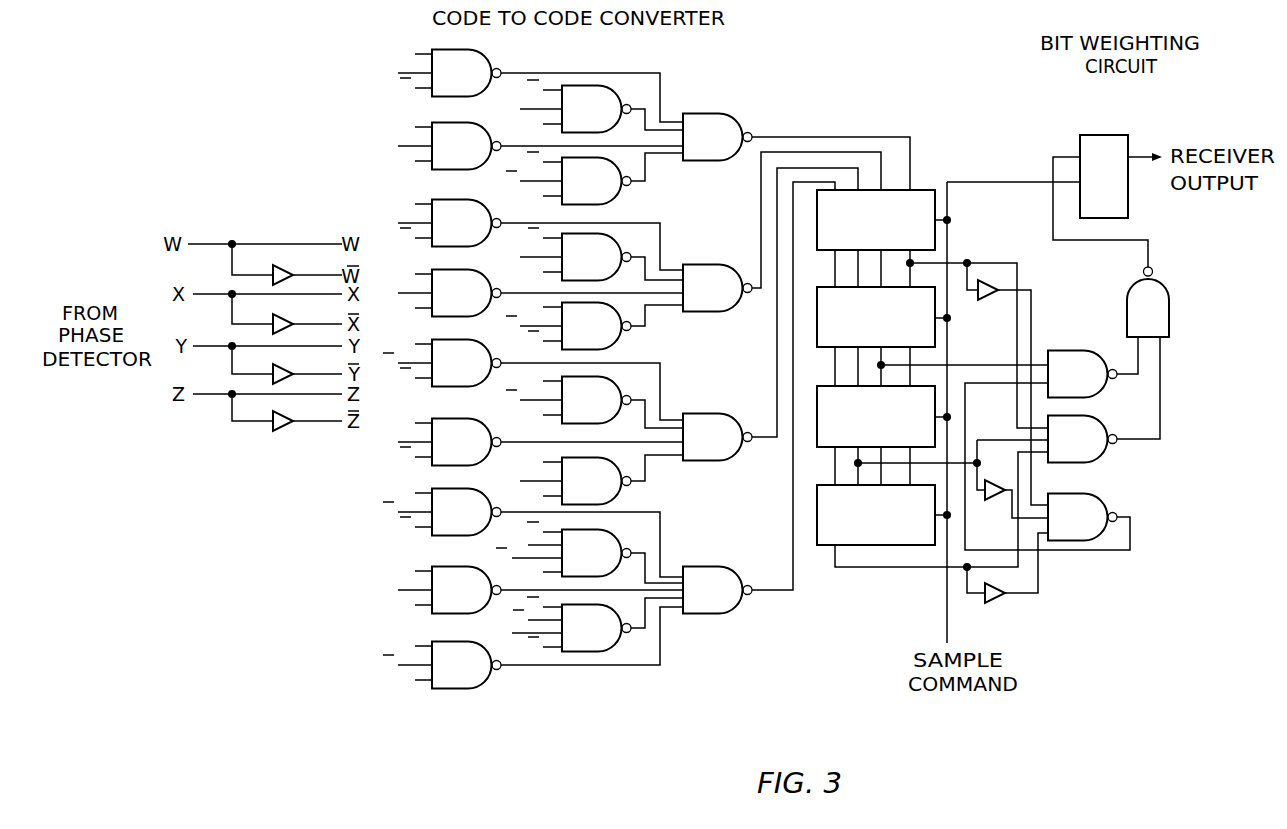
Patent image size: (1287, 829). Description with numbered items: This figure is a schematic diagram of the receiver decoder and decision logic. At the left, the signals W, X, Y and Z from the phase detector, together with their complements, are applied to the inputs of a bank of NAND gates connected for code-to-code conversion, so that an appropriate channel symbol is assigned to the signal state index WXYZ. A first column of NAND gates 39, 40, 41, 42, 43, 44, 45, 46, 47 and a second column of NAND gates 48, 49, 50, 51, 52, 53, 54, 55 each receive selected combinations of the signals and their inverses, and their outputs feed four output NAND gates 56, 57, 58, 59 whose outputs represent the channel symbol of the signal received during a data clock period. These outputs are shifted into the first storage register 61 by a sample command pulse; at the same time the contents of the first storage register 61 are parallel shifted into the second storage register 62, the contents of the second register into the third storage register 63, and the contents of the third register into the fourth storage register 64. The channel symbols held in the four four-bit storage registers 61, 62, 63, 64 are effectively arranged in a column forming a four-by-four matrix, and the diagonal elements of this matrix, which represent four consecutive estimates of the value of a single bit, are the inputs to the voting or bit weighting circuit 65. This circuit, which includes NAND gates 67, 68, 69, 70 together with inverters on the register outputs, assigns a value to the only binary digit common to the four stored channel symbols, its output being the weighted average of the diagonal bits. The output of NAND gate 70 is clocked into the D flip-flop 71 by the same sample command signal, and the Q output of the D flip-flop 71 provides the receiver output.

The NAND gate 39 is at (449, 86).
The NAND gate 40 is at (449, 159).
The NAND gate 41 is at (449, 236).
The NAND gate 42 is at (449, 306).
The NAND gate 43 is at (449, 376).
The NAND gate 44 is at (449, 455).
The NAND gate 45 is at (449, 525).
The NAND gate 46 is at (449, 603).
The NAND gate 47 is at (449, 678).
The NAND gate 48 is at (579, 122).
The NAND gate 49 is at (579, 194).
The NAND gate 50 is at (579, 270).
The NAND gate 51 is at (579, 339).
The NAND gate 52 is at (579, 413).
The NAND gate 53 is at (579, 494).
The NAND gate 54 is at (579, 566).
The NAND gate 55 is at (579, 641).
The NAND gate 56 is at (700, 150).
The NAND gate 57 is at (700, 301).
The NAND gate 58 is at (700, 450).
The NAND gate 59 is at (700, 603).
The first storage register 61 is at (925, 190).
The second storage register 62 is at (945, 342).
The third storage register 63 is at (815, 438).
The fourth storage register 64 is at (828, 548).
The bit weighting circuit 65 is at (1047, 323).
The NAND gate 67 is at (1065, 387).
The NAND gate 68 is at (1065, 452).
The NAND gate 69 is at (1065, 530).
The NAND gate 70 is at (1175, 306).
The D flip-flop 71 is at (1088, 134).